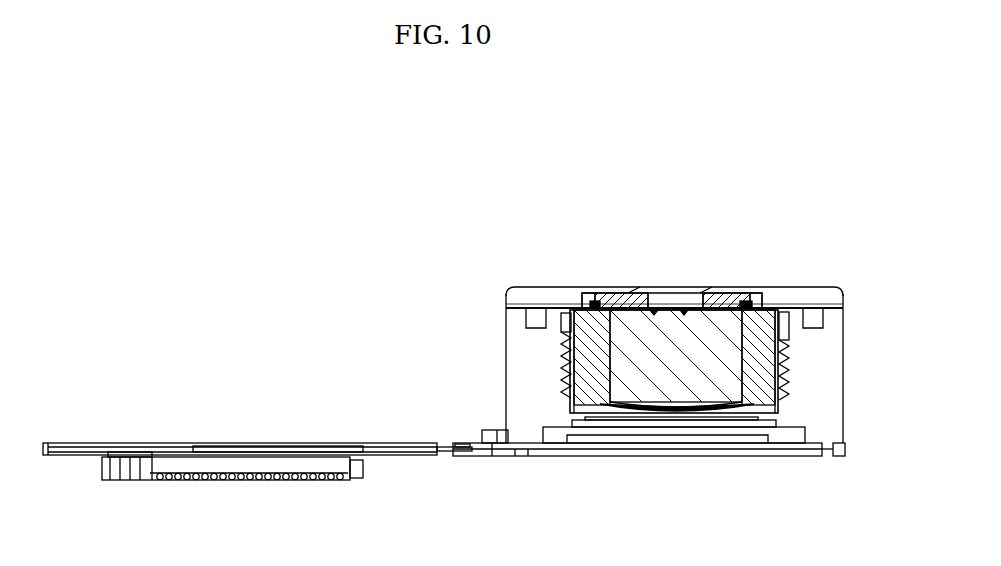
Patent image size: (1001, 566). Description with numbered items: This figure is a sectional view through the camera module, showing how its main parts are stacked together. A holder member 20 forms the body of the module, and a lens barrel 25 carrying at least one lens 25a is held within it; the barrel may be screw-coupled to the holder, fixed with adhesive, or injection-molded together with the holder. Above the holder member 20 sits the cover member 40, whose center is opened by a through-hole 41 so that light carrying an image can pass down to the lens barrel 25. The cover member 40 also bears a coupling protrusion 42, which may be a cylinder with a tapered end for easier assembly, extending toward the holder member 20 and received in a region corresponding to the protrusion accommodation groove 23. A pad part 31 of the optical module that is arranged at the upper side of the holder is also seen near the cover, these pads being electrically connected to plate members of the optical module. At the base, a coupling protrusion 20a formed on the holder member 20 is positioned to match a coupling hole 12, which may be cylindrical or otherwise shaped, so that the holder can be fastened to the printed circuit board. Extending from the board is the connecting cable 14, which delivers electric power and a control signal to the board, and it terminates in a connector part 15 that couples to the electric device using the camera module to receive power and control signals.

The coupling hole 12 is at (827, 456).
The connecting cable 14 is at (452, 455).
The connector part 15 is at (245, 484).
The holder member 20 is at (838, 406).
The coupling protrusion 20a is at (845, 452).
The protrusion accommodation groove 23 is at (823, 328).
The lens barrel 25 is at (777, 311).
The lens 25a is at (729, 331).
The pad part 31 is at (597, 294).
The cover member 40 is at (824, 292).
The through-hole 41 is at (673, 297).
The coupling protrusion 42 is at (823, 316).